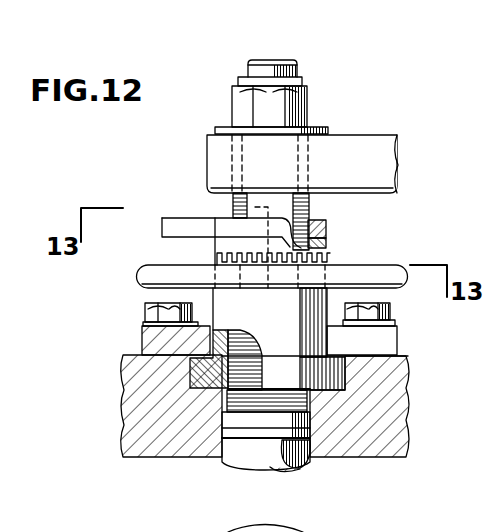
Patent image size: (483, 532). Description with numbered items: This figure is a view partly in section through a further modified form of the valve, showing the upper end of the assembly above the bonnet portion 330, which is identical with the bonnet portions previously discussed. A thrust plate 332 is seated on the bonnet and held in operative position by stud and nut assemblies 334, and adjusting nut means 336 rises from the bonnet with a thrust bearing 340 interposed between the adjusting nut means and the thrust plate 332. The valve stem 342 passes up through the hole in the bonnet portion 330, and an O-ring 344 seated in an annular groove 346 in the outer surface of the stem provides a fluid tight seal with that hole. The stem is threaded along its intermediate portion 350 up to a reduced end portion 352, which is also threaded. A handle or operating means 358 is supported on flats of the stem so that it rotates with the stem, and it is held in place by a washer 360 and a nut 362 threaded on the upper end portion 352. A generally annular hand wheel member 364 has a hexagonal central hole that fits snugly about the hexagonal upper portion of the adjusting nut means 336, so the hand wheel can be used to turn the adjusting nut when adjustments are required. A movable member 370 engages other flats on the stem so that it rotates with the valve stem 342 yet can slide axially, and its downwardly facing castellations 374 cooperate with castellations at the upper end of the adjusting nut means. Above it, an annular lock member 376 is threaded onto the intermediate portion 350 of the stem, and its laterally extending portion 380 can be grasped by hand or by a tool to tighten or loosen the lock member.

The bonnet portion 330 is at (398, 400).
The thrust plate 332 is at (386, 333).
The nut 334 is at (143, 308).
The adjusting nut means 336 is at (217, 403).
The thrust bearing 340 is at (185, 377).
The valve stem 342 is at (237, 455).
The O-ring 344 is at (366, 455).
The annular groove 346 is at (300, 467).
The intermediate portion 350 is at (215, 402).
The reduced end portion 352 is at (292, 69).
The handle or operating means 358 is at (392, 138).
The washer 360 is at (326, 128).
The nut 362 is at (309, 93).
The hand wheel member 364 is at (152, 266).
The movable member 370 is at (327, 245).
The castellations 374 is at (328, 263).
The lock member 376 is at (327, 229).
The laterally extending portion 380 is at (178, 223).